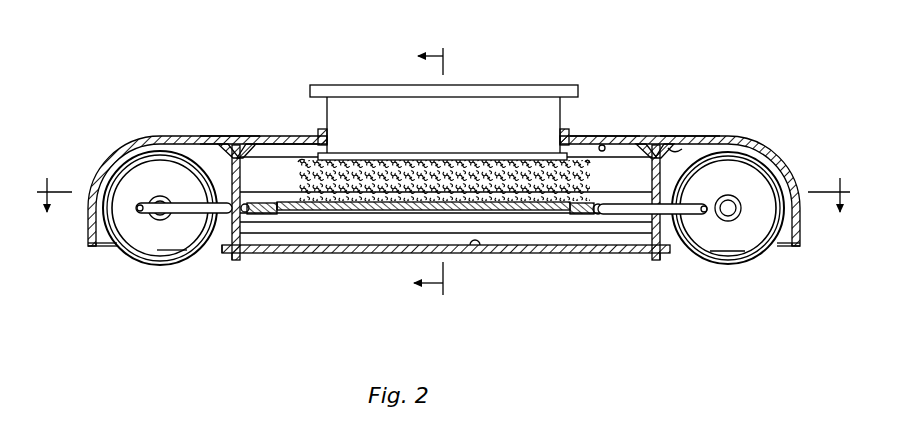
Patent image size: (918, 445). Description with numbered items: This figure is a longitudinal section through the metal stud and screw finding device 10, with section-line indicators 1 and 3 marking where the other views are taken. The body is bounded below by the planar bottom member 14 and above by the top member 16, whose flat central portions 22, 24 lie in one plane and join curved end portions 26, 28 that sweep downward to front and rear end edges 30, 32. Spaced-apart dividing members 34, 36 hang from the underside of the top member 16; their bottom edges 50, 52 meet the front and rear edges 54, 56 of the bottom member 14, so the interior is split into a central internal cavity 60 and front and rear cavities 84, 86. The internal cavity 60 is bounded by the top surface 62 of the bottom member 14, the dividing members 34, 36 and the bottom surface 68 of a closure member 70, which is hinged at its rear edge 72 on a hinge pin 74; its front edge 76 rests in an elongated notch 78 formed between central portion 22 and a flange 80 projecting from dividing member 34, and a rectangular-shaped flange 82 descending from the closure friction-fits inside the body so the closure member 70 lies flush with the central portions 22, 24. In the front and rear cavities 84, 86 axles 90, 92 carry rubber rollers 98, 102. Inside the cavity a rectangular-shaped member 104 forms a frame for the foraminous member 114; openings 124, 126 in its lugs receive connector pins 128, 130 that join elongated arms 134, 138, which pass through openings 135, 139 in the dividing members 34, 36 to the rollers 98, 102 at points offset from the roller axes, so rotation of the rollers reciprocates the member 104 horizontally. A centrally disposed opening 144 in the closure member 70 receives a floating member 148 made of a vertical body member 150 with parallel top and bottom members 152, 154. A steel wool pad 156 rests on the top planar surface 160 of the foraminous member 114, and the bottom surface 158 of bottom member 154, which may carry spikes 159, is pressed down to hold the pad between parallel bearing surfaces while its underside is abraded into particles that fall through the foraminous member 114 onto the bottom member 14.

The section line 1- 1 is at (443, 184).
The section line 3- 3 is at (441, 172).
The metal stud and screw finding device 10 is at (665, 48).
The bottom member 14 is at (358, 256).
The top member 16 is at (130, 130).
The central portion 22 is at (210, 137).
The central portion 24 is at (730, 137).
The end portion 26 is at (100, 166).
The end portion 28 is at (793, 160).
The front end edge 30 is at (92, 247).
The rear end edge 32 is at (798, 252).
The dividing member 34 is at (230, 252).
The dividing member 36 is at (665, 258).
The bottom edge 50 is at (234, 262).
The bottom edge 52 is at (655, 262).
The front edge 54 is at (239, 262).
The rear edge 56 is at (648, 256).
The internal cavity 60 is at (285, 150).
The top surface 62 is at (483, 256).
The bottom surface 68 is at (601, 137).
The closure member 70 is at (628, 137).
The rear edge 72 is at (680, 146).
The hinge pin 74 is at (650, 137).
The front edge 76 is at (230, 137).
The elongated notch 78 is at (242, 137).
The flange 80 is at (178, 137).
The rectangular-shaped flange 82 is at (260, 137).
The front cavity 84 is at (103, 256).
The rear cavity 86 is at (777, 250).
The axle 90 is at (157, 222).
The axle 92 is at (739, 185).
The rubber roller 98 is at (160, 208).
The rubber roller 102 is at (728, 208).
The rectangular-shaped member 104 is at (283, 212).
The foraminous member 114 is at (394, 222).
The opening 124 is at (258, 216).
The opening 126 is at (585, 216).
The connector pin 128 is at (220, 242).
The connector pin 130 is at (592, 220).
The elongated arm 134 is at (188, 204).
The opening 135 is at (246, 178).
The elongated arm 138 is at (640, 205).
The opening 139 is at (684, 248).
The opening 144 is at (322, 124).
The member 148 is at (545, 58).
The body member 150 is at (485, 106).
The top member 152 is at (387, 80).
The bottom member 154 is at (478, 158).
The steel wool pad 156 is at (393, 211).
The bottom surface 158 is at (430, 162).
The spikes 159 is at (344, 162).
The top planar surface 160 is at (334, 206).